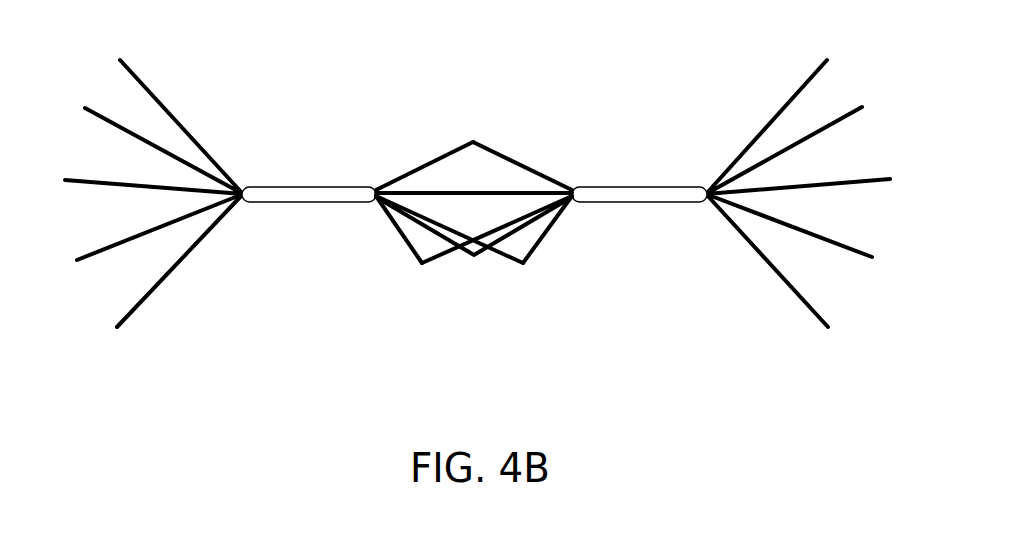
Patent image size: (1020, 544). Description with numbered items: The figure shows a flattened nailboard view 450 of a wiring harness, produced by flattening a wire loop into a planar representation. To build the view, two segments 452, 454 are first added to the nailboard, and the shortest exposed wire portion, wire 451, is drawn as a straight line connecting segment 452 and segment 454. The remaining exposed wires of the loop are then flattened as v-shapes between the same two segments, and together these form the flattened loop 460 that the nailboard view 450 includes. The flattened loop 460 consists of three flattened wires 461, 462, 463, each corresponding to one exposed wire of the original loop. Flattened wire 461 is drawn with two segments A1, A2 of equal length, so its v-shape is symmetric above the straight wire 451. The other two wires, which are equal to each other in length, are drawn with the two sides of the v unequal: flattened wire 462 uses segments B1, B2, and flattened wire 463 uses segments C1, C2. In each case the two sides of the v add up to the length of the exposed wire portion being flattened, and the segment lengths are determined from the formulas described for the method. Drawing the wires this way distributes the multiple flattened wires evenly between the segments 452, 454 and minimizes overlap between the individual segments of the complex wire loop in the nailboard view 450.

The flattened nailboard view 450 is at (477, 185).
The segment 452 is at (288, 205).
The segment 454 is at (667, 205).
The flattened loop 460 is at (482, 194).
The wire 451 is at (435, 188).
The flattened wire 461 is at (495, 151).
The flattened wire 462 is at (461, 277).
The flattened wire 463 is at (488, 272).
The segment A1 is at (420, 165).
The segment A2 is at (493, 148).
The segment B1 is at (393, 232).
The segment B2 is at (447, 258).
The segment C1 is at (505, 260).
The segment C2 is at (555, 230).